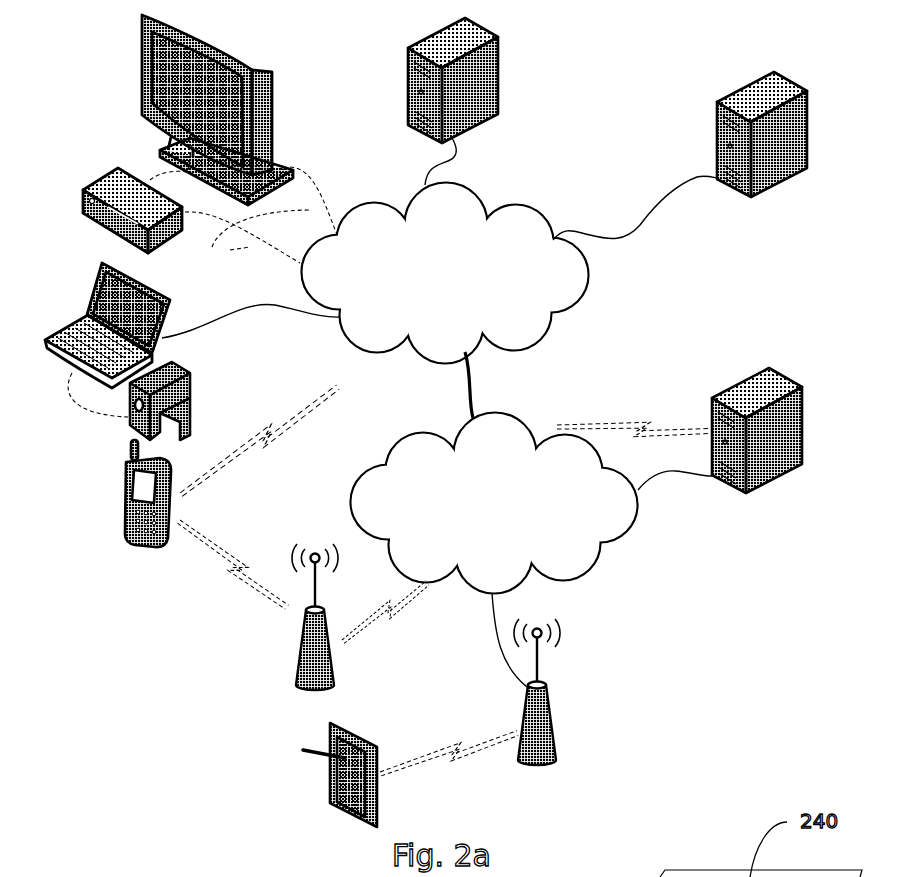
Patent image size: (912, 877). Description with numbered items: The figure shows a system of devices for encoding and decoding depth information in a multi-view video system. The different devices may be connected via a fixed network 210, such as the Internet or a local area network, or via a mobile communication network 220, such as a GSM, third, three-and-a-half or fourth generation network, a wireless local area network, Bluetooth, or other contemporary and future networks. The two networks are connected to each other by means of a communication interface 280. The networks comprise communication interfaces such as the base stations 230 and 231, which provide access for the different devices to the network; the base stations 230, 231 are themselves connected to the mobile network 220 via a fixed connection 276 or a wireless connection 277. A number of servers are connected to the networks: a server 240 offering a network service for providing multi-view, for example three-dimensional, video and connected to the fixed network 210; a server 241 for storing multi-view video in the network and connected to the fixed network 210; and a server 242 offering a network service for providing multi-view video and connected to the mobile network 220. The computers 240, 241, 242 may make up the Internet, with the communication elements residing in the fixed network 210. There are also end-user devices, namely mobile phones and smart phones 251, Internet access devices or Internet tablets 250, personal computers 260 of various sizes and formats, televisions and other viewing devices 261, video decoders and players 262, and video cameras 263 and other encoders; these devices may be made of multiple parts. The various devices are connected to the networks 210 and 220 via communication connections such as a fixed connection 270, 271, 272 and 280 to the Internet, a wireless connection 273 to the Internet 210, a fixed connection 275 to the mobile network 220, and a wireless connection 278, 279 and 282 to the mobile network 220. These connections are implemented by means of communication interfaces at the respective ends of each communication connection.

The fixed network 210 is at (568, 313).
The mobile communication network 220 is at (585, 573).
The base station 230 is at (290, 677).
The base station 231 is at (560, 708).
The server 240 is at (507, 50).
The server 241 is at (815, 112).
The server 242 is at (810, 407).
The Internet access device 250 is at (322, 798).
The mobile phone 251 is at (118, 505).
The personal computer 260 is at (82, 292).
The television 261 is at (127, 82).
The video decoder and player 262 is at (95, 173).
The video camera 263 is at (192, 365).
The fixed connection 270 is at (257, 307).
The fixed connection 271 is at (417, 172).
The fixed connection 272 is at (643, 215).
The wireless connection 273 is at (267, 415).
The fixed connection 275 is at (657, 475).
The fixed connection 276 is at (495, 665).
The wireless connection 277 is at (380, 637).
The wireless connection 278 is at (450, 770).
The wireless connection 279 is at (233, 542).
The communication interface 280 is at (475, 402).
The wireless connection 282 is at (605, 420).